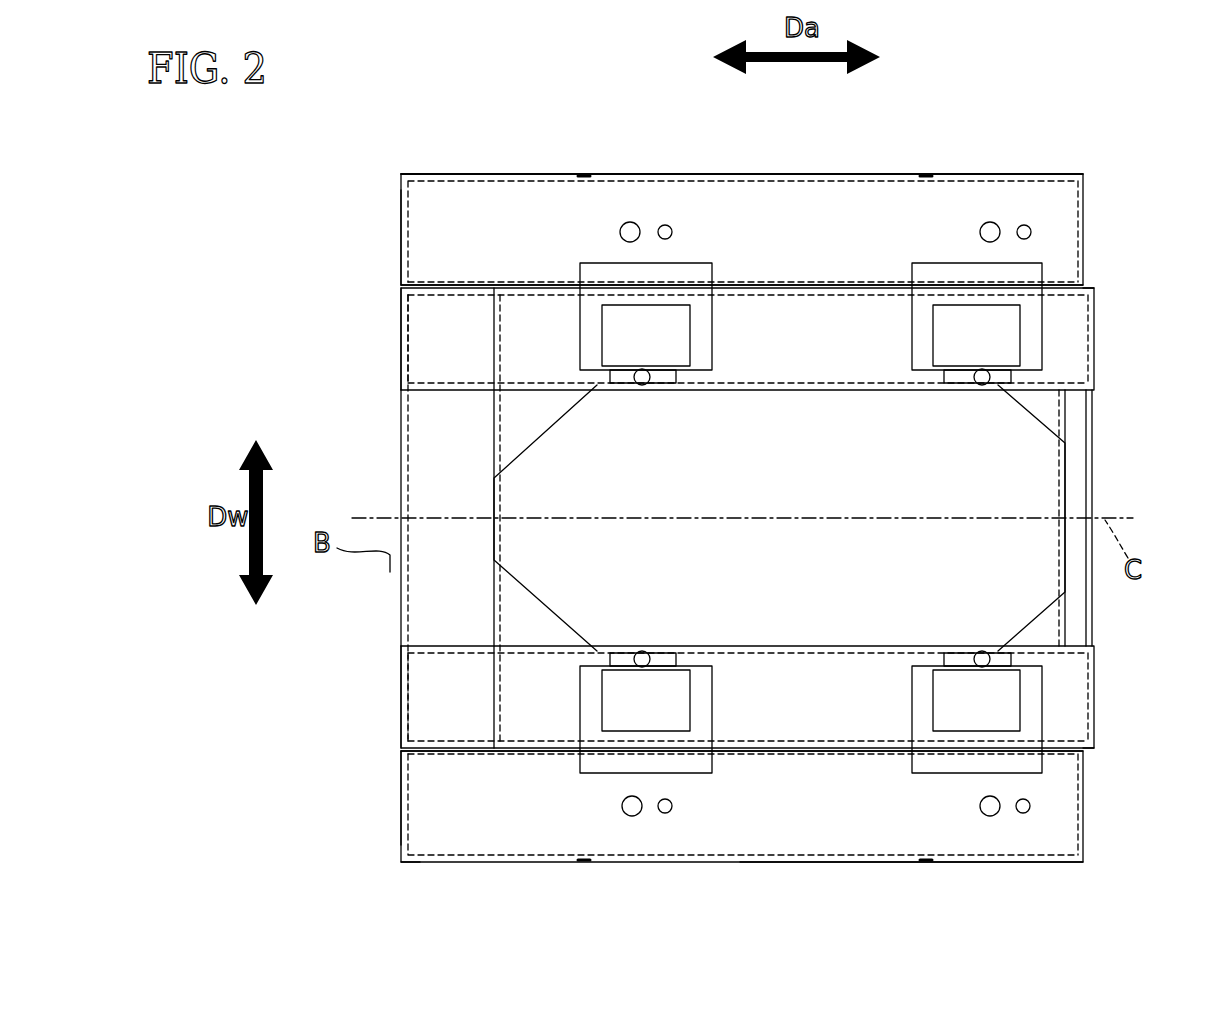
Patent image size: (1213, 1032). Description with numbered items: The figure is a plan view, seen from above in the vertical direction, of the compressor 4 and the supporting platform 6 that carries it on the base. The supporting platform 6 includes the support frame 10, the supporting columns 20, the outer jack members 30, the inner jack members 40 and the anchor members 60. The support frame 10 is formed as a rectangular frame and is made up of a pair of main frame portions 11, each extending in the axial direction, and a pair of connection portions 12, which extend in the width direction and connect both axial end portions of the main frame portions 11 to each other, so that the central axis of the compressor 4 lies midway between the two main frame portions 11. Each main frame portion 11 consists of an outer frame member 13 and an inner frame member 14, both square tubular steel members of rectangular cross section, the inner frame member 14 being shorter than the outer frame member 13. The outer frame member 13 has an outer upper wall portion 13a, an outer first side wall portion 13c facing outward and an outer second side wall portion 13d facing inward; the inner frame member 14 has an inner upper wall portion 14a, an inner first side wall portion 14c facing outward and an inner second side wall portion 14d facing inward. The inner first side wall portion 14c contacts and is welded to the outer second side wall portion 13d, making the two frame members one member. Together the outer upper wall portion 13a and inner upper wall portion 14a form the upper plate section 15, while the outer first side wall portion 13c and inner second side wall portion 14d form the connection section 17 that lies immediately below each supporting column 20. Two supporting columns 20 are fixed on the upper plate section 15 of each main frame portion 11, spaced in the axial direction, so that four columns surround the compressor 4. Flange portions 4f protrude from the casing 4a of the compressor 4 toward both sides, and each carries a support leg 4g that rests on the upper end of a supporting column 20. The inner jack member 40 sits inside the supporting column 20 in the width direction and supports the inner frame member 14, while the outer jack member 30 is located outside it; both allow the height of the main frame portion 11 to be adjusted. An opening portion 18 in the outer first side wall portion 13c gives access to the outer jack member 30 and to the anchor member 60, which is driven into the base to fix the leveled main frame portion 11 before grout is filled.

The compressor 4 is at (1040, 418).
The casing 4a is at (1040, 620).
The flange portion 4f is at (605, 385).
The support leg 4g is at (602, 335).
The supporting platform 6 is at (486, 165).
The support frame 10 is at (546, 173).
The main frame portion 11 is at (833, 174).
The connection portion 12 is at (401, 500).
The outer frame member 13 is at (1084, 190).
The outer upper wall portion 13a is at (423, 215).
The outer first side wall portion 13c is at (396, 180).
The outer second side wall portion 13d is at (445, 282).
The inner frame member 14 is at (1095, 300).
The inner upper wall portion 14a is at (505, 345).
The inner first side wall portion 14c is at (495, 298).
The inner second side wall portion 14d is at (520, 383).
The upper plate section 15 is at (1070, 335).
The connection section 17 is at (768, 285).
The opening portion 18 is at (597, 173).
The supporting column 20 is at (700, 263).
The outer jack member 30 is at (665, 225).
The inner jack member 40 is at (650, 383).
The anchor member 60 is at (630, 222).